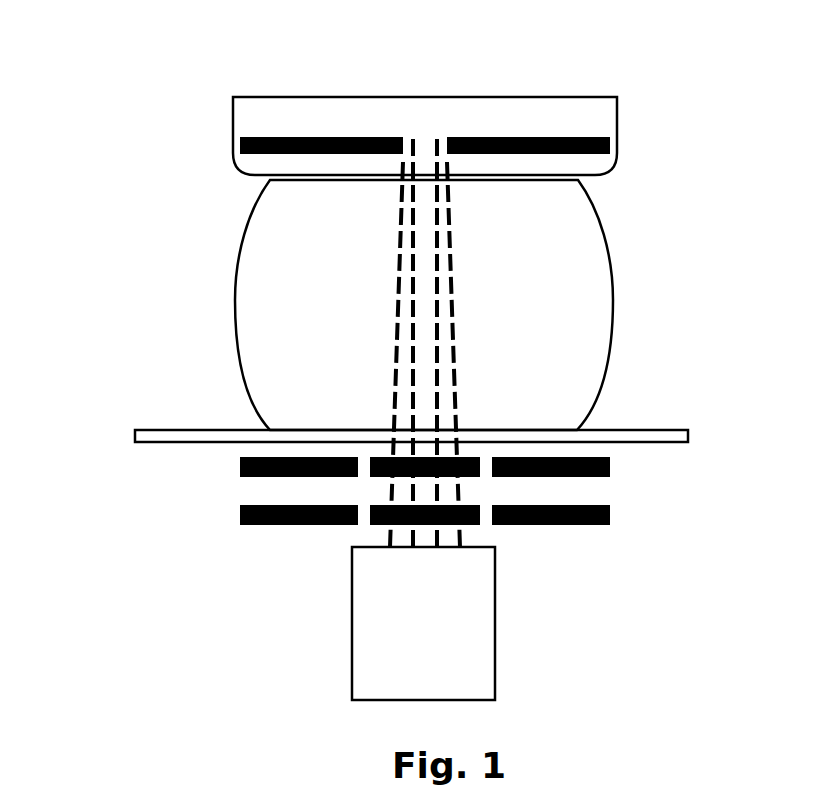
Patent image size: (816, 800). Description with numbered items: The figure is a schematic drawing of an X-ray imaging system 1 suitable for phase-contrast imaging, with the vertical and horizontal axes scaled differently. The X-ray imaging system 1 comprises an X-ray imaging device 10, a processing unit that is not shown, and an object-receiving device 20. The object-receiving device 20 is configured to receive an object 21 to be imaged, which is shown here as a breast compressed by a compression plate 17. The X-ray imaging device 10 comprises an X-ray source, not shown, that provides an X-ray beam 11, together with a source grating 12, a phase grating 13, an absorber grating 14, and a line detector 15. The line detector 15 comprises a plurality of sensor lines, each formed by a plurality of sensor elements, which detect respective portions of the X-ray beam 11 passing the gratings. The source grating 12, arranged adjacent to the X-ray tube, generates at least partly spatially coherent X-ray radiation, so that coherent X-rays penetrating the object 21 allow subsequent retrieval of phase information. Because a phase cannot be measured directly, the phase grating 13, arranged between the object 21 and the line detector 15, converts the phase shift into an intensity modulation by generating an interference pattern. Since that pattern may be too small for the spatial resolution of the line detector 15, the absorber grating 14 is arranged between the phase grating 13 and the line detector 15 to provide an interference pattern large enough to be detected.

The X-ray imaging system 1 is at (162, 95).
The X-ray imaging device 10 is at (137, 162).
The X-ray beam 11 is at (423, 292).
The source grating 12 is at (612, 150).
The phase grating 13 is at (610, 467).
The absorber grating 14 is at (610, 518).
The line detector 15 is at (488, 632).
The compression plate 17 is at (602, 120).
The object-receiving device 20 is at (663, 430).
The object 21 is at (578, 283).